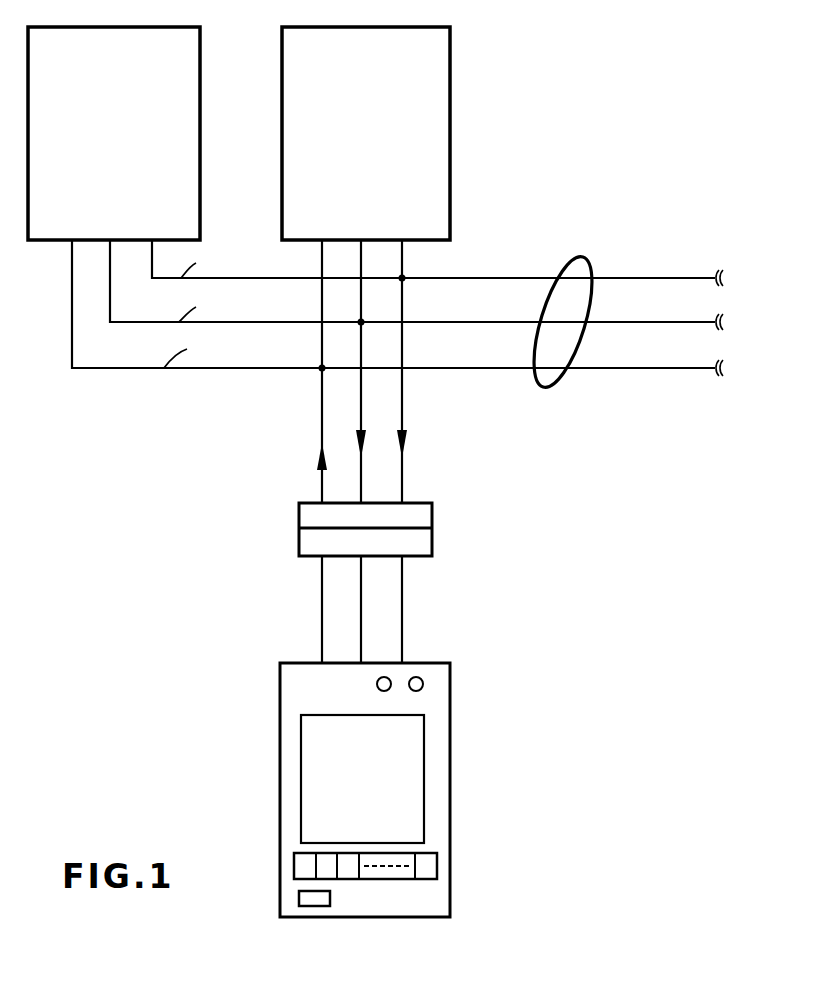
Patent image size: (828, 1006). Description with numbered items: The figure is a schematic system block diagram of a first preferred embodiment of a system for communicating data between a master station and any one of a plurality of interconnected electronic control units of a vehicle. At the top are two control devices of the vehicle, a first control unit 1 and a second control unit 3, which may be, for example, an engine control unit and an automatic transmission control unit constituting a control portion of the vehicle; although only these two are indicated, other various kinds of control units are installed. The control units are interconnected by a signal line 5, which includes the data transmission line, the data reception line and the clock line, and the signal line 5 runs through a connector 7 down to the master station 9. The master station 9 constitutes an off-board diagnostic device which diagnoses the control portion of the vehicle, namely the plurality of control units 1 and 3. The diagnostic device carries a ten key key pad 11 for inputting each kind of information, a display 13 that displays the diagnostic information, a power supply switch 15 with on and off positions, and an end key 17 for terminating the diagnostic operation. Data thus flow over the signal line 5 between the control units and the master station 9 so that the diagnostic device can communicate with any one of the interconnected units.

The first control unit 1 is at (178, 27).
The second control unit 3 is at (428, 27).
The signal line 5 is at (569, 373).
The connector 7 is at (432, 508).
The master station 9 is at (290, 690).
The ten key key pad 11 is at (437, 861).
The display 13 is at (414, 760).
The power supply switch 15 is at (424, 683).
The end key 17 is at (311, 907).